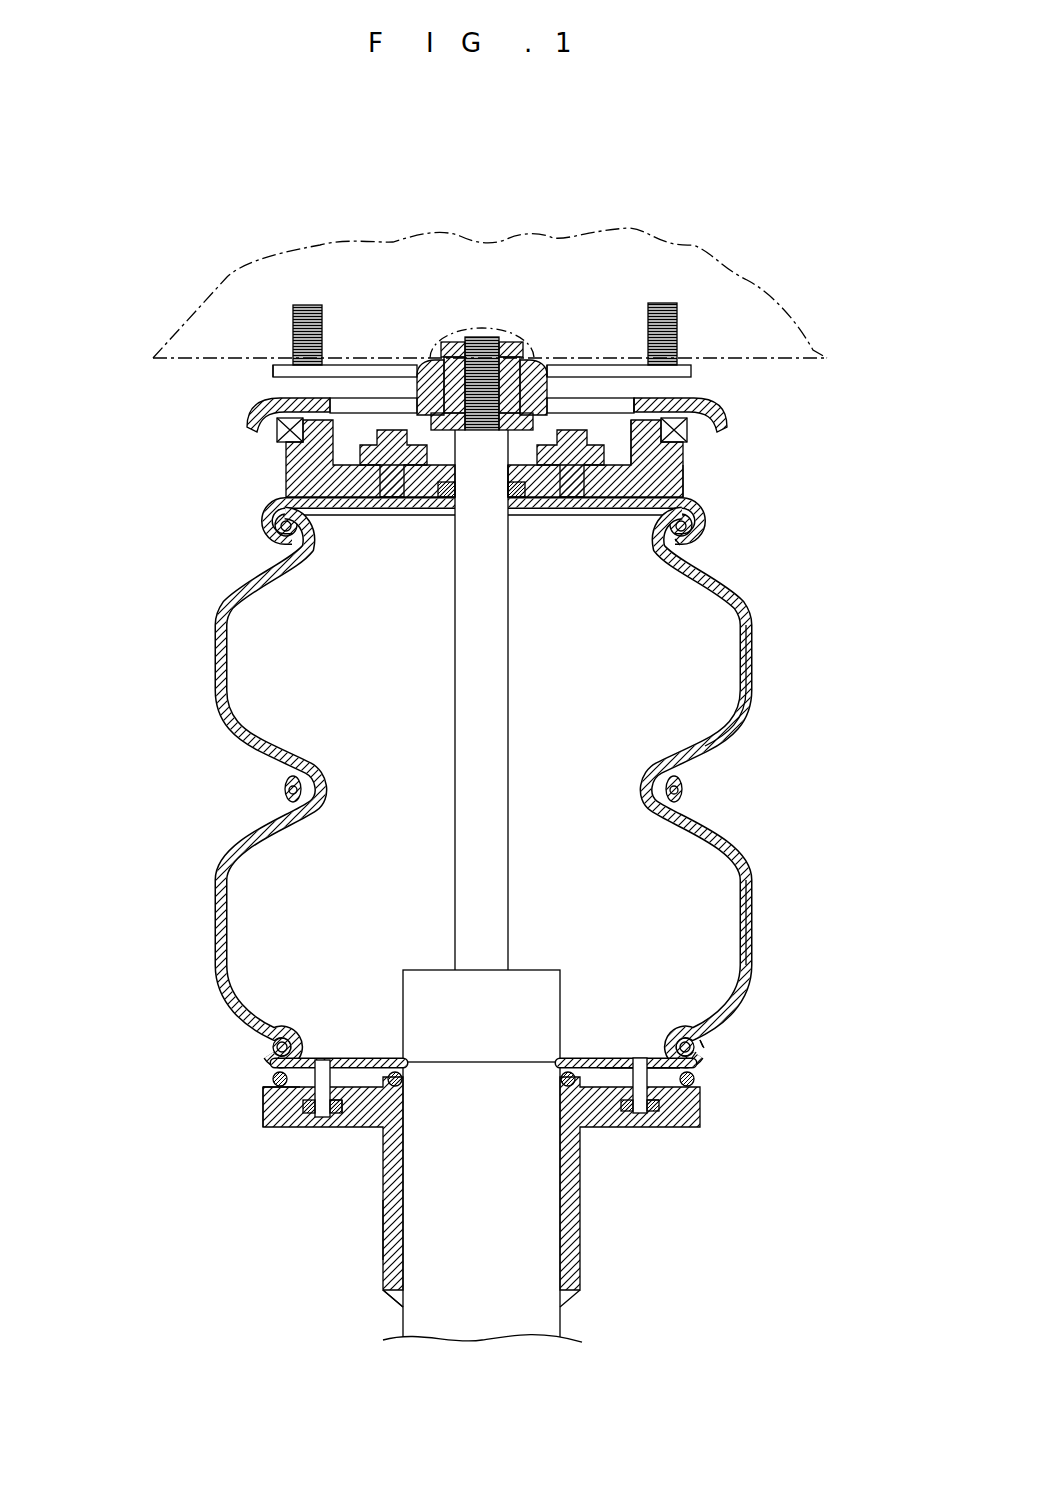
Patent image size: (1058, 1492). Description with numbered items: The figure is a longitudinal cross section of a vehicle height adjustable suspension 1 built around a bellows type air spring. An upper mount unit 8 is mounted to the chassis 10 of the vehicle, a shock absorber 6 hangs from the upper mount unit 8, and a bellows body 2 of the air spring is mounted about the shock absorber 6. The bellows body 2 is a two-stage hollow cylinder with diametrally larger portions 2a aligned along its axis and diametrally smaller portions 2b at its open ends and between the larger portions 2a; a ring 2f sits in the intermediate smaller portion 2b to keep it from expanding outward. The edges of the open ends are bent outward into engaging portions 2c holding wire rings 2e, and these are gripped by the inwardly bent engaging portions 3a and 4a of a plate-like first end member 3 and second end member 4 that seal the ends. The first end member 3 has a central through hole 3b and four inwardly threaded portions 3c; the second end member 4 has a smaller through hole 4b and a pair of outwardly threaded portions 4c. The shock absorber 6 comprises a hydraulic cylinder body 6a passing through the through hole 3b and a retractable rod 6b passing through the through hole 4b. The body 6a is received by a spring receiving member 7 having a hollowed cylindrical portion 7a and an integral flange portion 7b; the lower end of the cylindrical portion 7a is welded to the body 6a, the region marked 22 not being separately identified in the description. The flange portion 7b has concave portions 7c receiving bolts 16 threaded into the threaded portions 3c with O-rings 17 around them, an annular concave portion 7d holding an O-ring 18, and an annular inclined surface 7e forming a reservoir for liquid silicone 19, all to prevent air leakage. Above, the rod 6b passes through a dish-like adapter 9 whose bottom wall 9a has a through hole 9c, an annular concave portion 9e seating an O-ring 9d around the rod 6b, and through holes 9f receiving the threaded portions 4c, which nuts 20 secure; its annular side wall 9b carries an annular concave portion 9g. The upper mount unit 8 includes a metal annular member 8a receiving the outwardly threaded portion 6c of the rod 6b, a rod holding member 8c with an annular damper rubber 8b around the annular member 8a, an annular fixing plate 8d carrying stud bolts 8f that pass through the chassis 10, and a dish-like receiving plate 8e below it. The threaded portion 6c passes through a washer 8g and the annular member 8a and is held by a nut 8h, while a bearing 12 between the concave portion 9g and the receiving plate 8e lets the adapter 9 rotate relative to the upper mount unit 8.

The vehicle height adjustable suspension 1 is at (743, 752).
The bellows body 2 is at (263, 755).
The diametrally larger portions 2a is at (755, 667).
The diametrally smaller portions 2b is at (280, 555).
The engaging portions 2c is at (702, 537).
The wire rings 2e is at (706, 518).
The ring 2f is at (686, 785).
The first end member 3 is at (703, 1045).
The engaging portion 3a is at (700, 990).
The through hole 3b is at (678, 980).
The inwardly threaded portions 3c is at (702, 1068).
The second end member 4 is at (684, 497).
The engaging portion 4a is at (452, 491).
The through hole 4b is at (456, 504).
The outwardly threaded portions 4c is at (660, 467).
The shock absorber 6 is at (441, 656).
The shock absorber body 6a is at (500, 1220).
The retractable rod 6b is at (478, 880).
The outwardly threaded portion 6c is at (484, 338).
The spring receiving member 7 is at (582, 1208).
The hollowed cylindrical portion 7a is at (390, 1237).
The flange portion 7b is at (272, 1128).
The concave portions 7c is at (351, 1127).
The annular concave portion 7d is at (265, 1110).
The annular inclined surface 7e is at (593, 1128).
The upper mount unit 8 is at (548, 352).
The annular member 8a is at (537, 385).
The annular damper rubber 8b is at (442, 373).
The rod holding member 8c is at (531, 327).
The annular fixing plate 8d is at (693, 364).
The dish-like receiving plate 8e is at (275, 418).
The stud bolts 8f is at (307, 304).
The washer 8g is at (640, 430).
The nut 8h is at (458, 350).
The adapter 9 is at (275, 479).
The bottom wall 9a is at (624, 484).
The annular side wall 9b is at (677, 460).
The through hole 9c is at (498, 488).
The O-ring 9d is at (510, 490).
The annular concave portion 9e is at (258, 522).
The through holes 9f is at (285, 495).
The annular concave portion 9g is at (278, 445).
The chassis 10 is at (360, 288).
The bearing 12 is at (680, 450).
The bolts 16 is at (323, 1127).
The O-rings 17 is at (700, 1122).
The O-ring 18 is at (275, 1085).
The liquid silicone 19 is at (362, 1120).
The nuts 20 is at (287, 455).
The weld 22 is at (390, 1297).